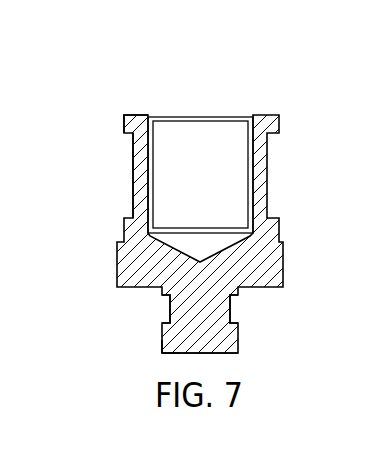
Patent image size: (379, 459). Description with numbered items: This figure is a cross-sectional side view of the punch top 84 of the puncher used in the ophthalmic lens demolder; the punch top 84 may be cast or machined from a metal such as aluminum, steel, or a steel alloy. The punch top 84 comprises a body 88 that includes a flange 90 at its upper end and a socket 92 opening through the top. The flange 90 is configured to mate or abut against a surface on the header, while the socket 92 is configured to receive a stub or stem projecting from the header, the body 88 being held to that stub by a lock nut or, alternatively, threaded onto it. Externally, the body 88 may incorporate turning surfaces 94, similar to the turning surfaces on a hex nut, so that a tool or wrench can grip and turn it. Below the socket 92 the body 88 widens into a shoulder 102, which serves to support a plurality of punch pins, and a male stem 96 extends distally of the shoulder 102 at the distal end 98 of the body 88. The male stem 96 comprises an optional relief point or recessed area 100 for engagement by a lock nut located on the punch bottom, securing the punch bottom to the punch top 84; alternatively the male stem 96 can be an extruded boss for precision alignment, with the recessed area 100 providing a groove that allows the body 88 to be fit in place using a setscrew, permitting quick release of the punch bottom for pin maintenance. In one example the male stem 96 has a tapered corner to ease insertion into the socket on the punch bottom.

The punch top 84 is at (112, 213).
The body 88 is at (268, 200).
The flange 90 is at (127, 123).
The socket 92 is at (243, 143).
The turning surfaces 94 is at (134, 158).
The male stem 96 is at (239, 353).
The distal end 98 is at (163, 357).
The recessed area 100 is at (166, 310).
The shoulder 102 is at (258, 289).